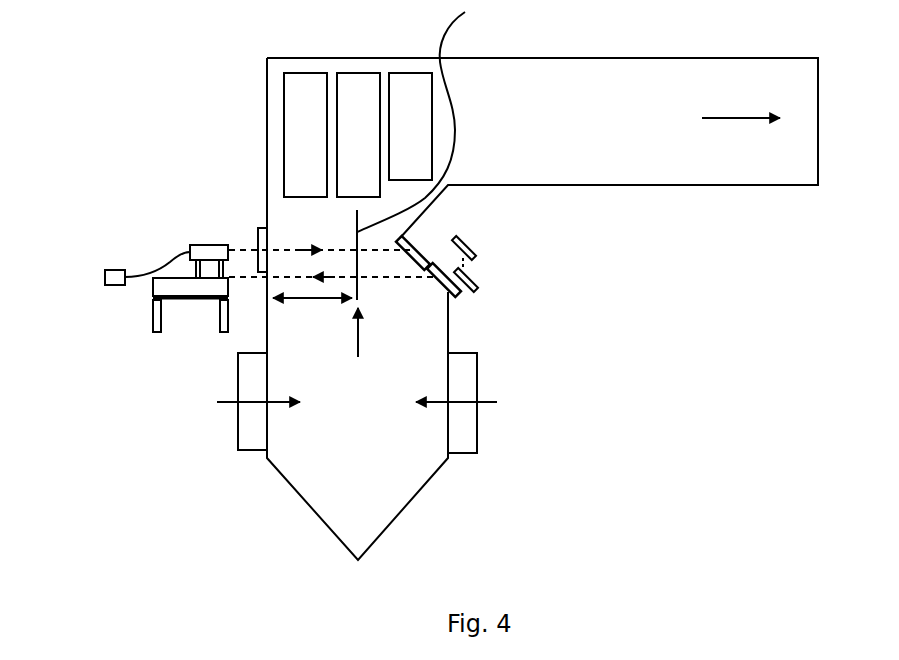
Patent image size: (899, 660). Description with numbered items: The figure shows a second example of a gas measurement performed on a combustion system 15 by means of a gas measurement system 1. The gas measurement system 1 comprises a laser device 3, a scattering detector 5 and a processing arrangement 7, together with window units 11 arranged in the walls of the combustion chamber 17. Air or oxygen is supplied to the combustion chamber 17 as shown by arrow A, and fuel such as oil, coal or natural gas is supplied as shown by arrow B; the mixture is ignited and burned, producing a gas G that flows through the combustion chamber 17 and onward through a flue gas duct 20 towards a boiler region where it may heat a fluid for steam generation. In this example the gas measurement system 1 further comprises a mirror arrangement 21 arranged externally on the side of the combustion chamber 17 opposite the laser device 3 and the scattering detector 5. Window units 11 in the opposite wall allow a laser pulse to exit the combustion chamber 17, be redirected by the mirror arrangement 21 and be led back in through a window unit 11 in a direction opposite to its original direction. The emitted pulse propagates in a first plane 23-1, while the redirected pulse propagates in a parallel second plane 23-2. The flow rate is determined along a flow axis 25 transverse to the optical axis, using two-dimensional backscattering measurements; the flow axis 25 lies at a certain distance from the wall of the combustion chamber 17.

The gas measurement system 1 is at (96, 226).
The laser device 3 is at (178, 290).
The scattering detector 5 is at (202, 245).
The processing arrangement 7 is at (106, 284).
The window unit 11 is at (262, 229).
The combustion system 15 is at (670, 244).
The combustion chamber 17 is at (267, 340).
The flue gas duct 20 is at (587, 67).
The mirror arrangement 21 is at (477, 261).
The first plane 23-1 is at (293, 250).
The second plane 23-2 is at (295, 287).
The flow axis 25 is at (428, 118).